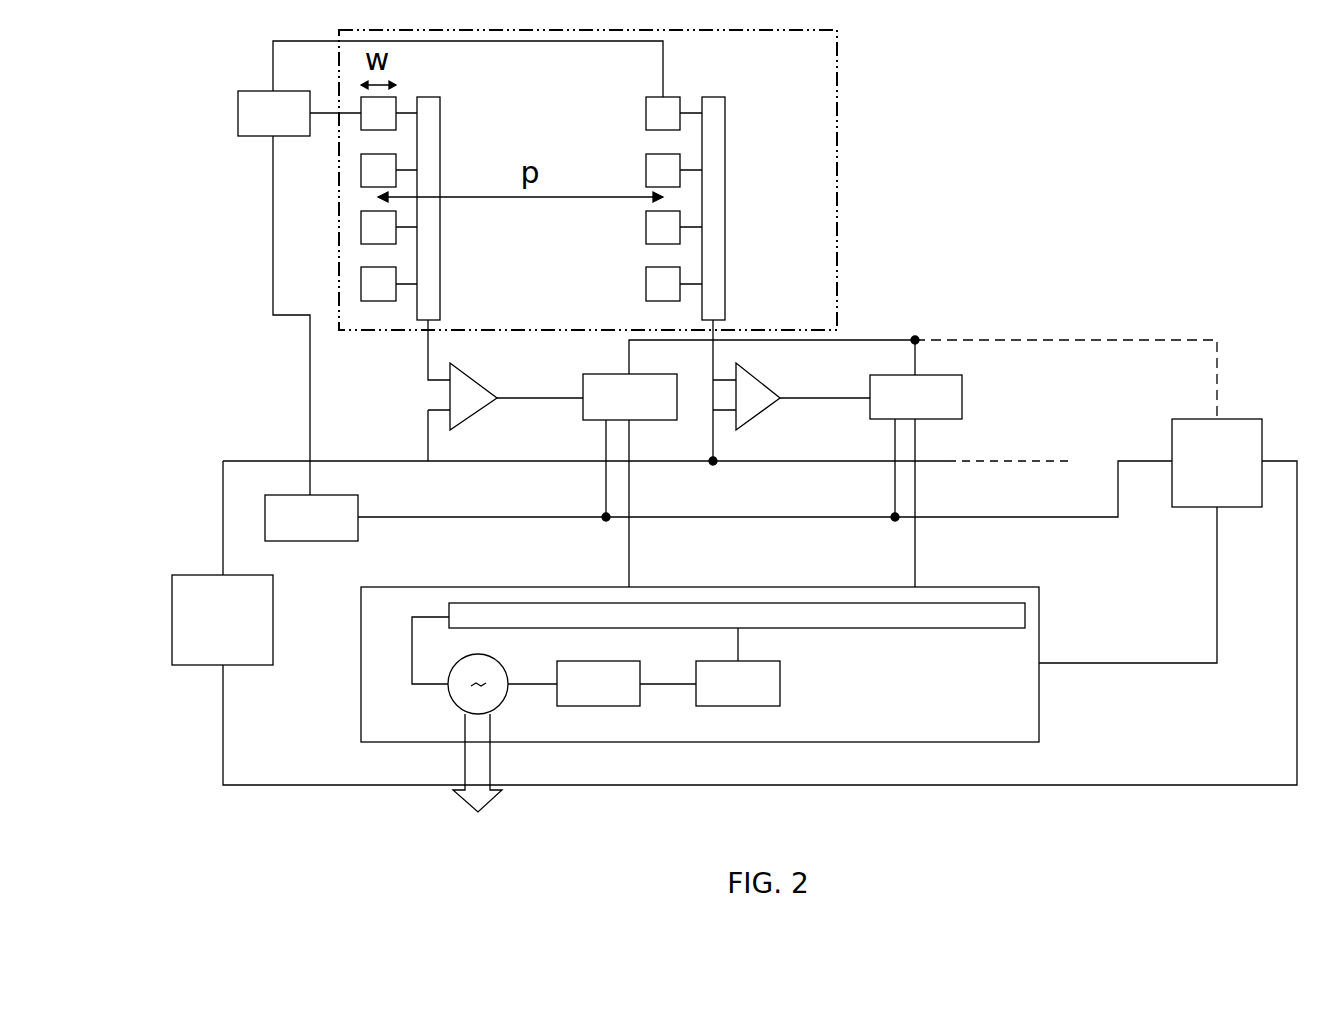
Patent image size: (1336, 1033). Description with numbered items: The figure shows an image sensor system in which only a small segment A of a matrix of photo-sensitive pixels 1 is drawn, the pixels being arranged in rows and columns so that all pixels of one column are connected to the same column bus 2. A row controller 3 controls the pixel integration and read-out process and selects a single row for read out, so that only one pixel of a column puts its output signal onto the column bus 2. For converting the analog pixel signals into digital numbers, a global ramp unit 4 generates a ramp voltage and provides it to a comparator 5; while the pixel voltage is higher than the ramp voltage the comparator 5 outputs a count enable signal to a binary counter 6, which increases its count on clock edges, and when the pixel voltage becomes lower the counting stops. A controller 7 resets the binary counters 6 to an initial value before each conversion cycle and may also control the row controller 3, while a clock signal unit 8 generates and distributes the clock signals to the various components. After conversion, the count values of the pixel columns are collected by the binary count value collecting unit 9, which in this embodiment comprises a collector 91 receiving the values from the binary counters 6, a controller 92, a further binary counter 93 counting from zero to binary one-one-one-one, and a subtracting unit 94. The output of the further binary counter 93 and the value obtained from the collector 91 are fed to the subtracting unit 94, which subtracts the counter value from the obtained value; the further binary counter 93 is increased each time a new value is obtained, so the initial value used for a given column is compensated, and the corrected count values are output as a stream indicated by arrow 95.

The segment of the matrix A is at (837, 82).
The photo-sensitive pixel 1 is at (660, 115).
The column bus 2 is at (713, 132).
The row controller 3 is at (250, 117).
The global ramp unit 4 is at (225, 643).
The comparator 5 is at (465, 400).
The binary counter 6 is at (918, 397).
The controller 7 is at (1203, 440).
The clock signal unit 8 is at (298, 513).
The binary count value collecting unit 9 is at (1039, 712).
The collector 91 is at (1025, 613).
The controller 92 is at (753, 683).
The further binary counter 93 is at (603, 683).
The subtracting unit 94 is at (453, 700).
The arrow 95 is at (480, 765).